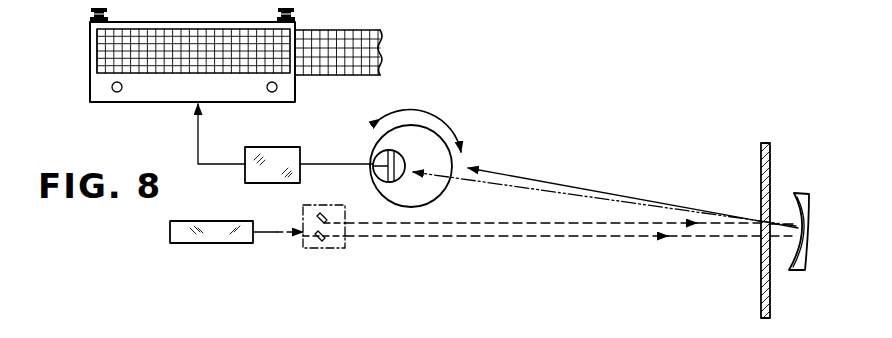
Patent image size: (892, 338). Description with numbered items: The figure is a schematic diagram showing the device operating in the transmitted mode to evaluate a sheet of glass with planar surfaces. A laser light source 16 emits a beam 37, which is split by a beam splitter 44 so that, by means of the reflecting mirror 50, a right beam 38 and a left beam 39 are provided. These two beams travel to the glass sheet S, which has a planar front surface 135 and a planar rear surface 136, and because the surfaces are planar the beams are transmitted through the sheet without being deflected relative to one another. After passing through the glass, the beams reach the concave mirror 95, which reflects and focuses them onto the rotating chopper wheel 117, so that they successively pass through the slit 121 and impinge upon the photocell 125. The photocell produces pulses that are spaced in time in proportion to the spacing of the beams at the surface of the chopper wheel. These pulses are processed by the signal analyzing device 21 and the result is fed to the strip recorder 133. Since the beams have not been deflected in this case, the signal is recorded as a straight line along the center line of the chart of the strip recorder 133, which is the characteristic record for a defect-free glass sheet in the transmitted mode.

The strip recorder 133 is at (95, 86).
The signal analyzing device 21 is at (277, 151).
The chopper wheel 117 is at (424, 183).
The photocell 125 is at (374, 170).
The slit 121 is at (372, 152).
The laser light source 16 is at (168, 232).
The beam 37 is at (270, 234).
The reflecting mirror 50 is at (322, 215).
The beam splitter 44 is at (327, 242).
The left beam 39 is at (553, 223).
The right beam 38 is at (490, 236).
The front surface 135 is at (760, 183).
The glass sheet S is at (760, 253).
The rear surface 136 is at (772, 288).
The concave mirror 95 is at (808, 205).